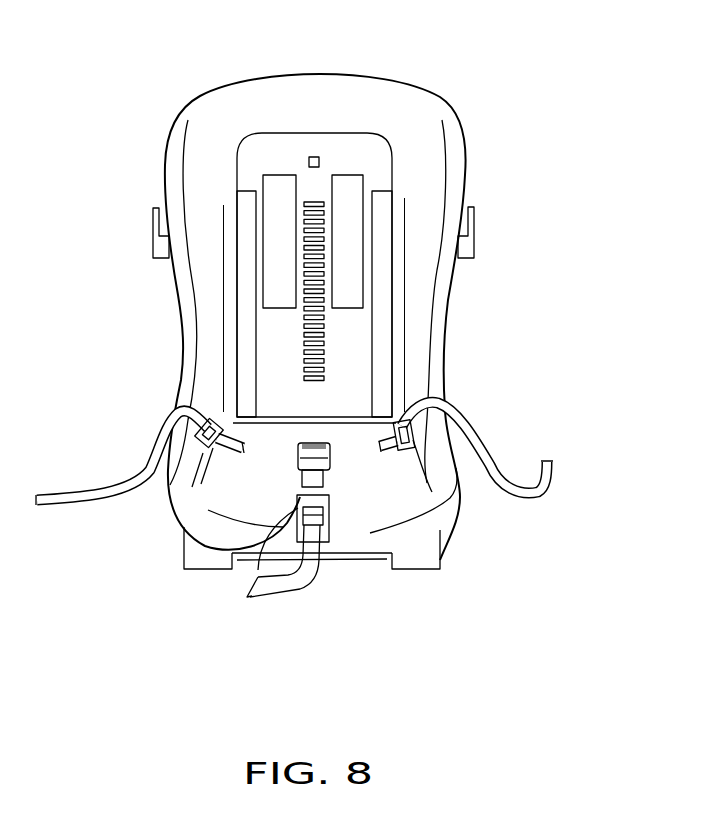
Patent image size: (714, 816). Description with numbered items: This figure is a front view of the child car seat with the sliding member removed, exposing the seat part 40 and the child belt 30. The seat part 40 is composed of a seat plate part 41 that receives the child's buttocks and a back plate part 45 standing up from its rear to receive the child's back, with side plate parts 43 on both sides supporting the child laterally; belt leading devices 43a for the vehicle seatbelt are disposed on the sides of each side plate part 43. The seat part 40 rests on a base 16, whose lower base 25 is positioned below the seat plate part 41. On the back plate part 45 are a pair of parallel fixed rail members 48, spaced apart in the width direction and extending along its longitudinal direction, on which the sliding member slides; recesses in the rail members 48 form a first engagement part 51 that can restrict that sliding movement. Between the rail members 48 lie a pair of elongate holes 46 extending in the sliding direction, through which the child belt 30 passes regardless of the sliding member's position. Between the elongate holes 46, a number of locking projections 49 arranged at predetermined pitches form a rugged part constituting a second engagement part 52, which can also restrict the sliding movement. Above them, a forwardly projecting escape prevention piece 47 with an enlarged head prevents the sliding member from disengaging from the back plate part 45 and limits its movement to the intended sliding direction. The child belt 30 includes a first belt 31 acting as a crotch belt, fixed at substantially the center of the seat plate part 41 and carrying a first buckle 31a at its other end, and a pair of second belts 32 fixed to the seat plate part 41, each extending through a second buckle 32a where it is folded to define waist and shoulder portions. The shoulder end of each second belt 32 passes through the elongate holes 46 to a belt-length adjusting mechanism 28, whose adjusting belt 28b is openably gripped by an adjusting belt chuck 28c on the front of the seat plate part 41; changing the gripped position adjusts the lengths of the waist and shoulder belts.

The seat part 40 is at (473, 103).
The side plate part 43 is at (180, 290).
The belt leading device 43a is at (155, 236).
The back plate part 45 is at (290, 140).
The elongate hole 46 is at (280, 187).
The escape prevention piece 47 is at (314, 157).
The rail member 48 is at (307, 288).
The first engagement part 51 is at (243, 198).
The locking projection 49 is at (428, 291).
The second engagement part 52 is at (325, 353).
The base 16 is at (255, 563).
The lower base 25 is at (186, 556).
The child belt 30 is at (320, 478).
The second belt 32 is at (70, 494).
The second buckle 32a is at (203, 449).
The first belt 31 is at (291, 478).
The first buckle 31a is at (298, 445).
The seat plate part 41 is at (383, 497).
The belt-length adjusting mechanism 28 is at (285, 592).
The adjusting belt 28b is at (275, 585).
The adjusting belt chuck 28c is at (252, 592).